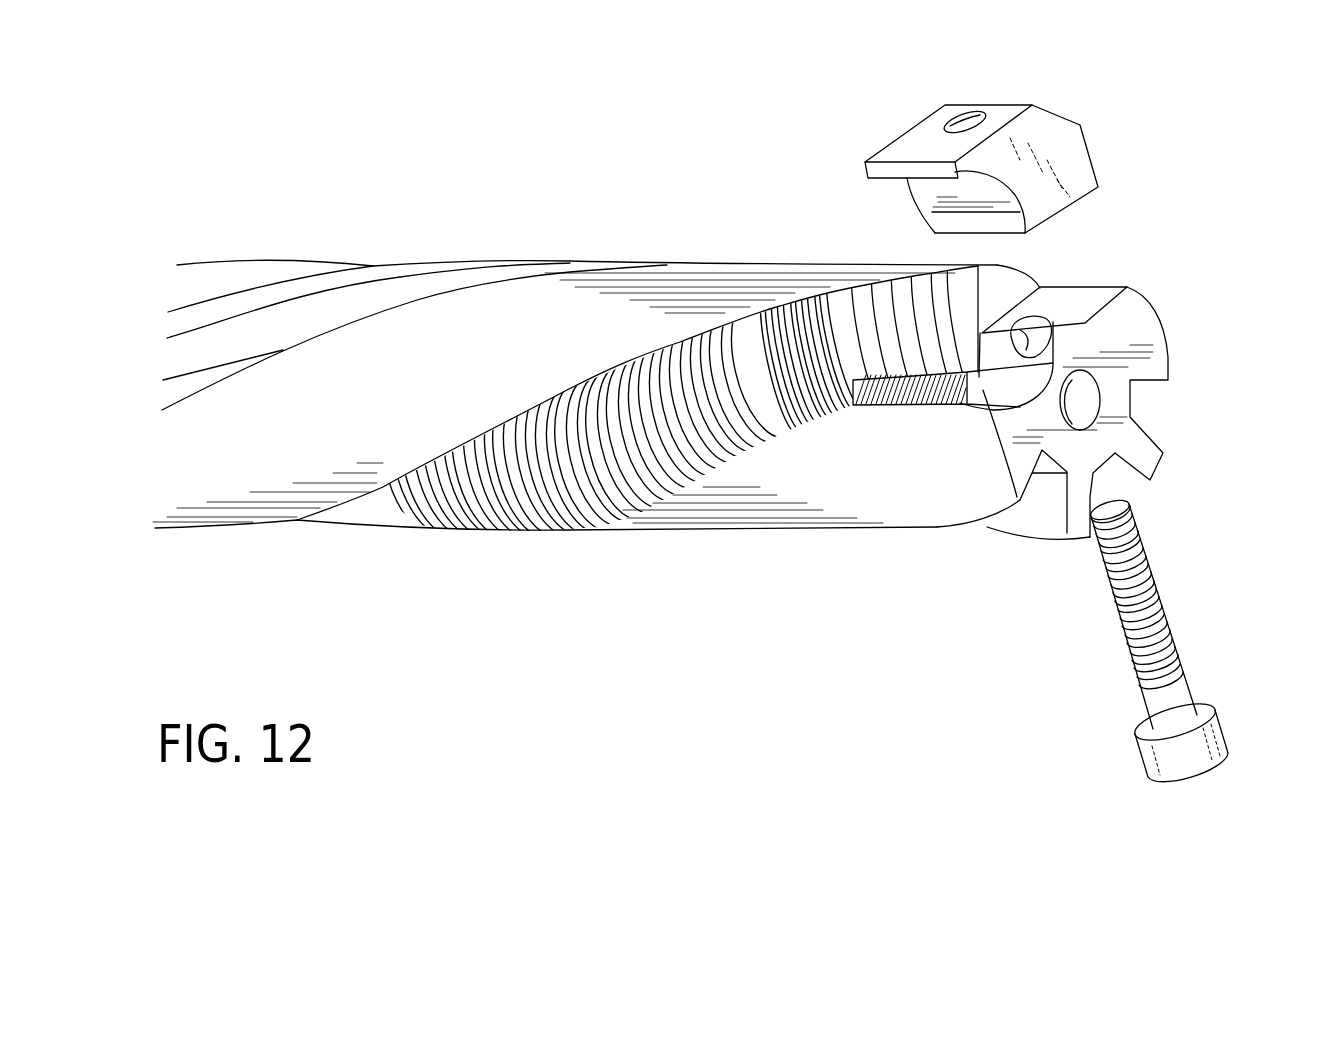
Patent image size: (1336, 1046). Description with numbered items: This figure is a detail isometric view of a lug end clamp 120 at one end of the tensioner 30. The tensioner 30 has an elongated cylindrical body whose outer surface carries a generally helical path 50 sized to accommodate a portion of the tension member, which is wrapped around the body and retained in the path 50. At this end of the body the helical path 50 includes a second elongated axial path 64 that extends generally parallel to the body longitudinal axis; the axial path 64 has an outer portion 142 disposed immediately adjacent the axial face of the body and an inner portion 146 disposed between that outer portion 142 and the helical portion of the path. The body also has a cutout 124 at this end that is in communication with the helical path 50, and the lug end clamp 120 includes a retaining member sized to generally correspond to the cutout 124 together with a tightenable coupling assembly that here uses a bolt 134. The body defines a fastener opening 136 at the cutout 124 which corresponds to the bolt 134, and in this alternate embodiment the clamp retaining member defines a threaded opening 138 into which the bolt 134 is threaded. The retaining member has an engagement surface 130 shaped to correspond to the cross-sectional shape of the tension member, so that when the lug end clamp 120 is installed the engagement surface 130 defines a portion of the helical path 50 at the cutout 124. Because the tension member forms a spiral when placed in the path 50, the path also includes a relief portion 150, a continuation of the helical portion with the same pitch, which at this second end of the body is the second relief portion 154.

The tensioner 30 is at (518, 340).
The helical path 50 is at (607, 470).
The second elongated axial path 64 is at (910, 407).
The lug end clamp 120 is at (1072, 153).
The cutout 124 is at (1062, 264).
The engagement surface 130 is at (943, 200).
The bolt 134 is at (1157, 600).
The fastener opening 136 is at (1053, 330).
The threaded opening 138 is at (978, 113).
The axial path outer portion 142 is at (983, 390).
The axial path inner portion 146 is at (880, 403).
The relief portion 150 is at (907, 315).
The second relief portion 154 is at (847, 338).